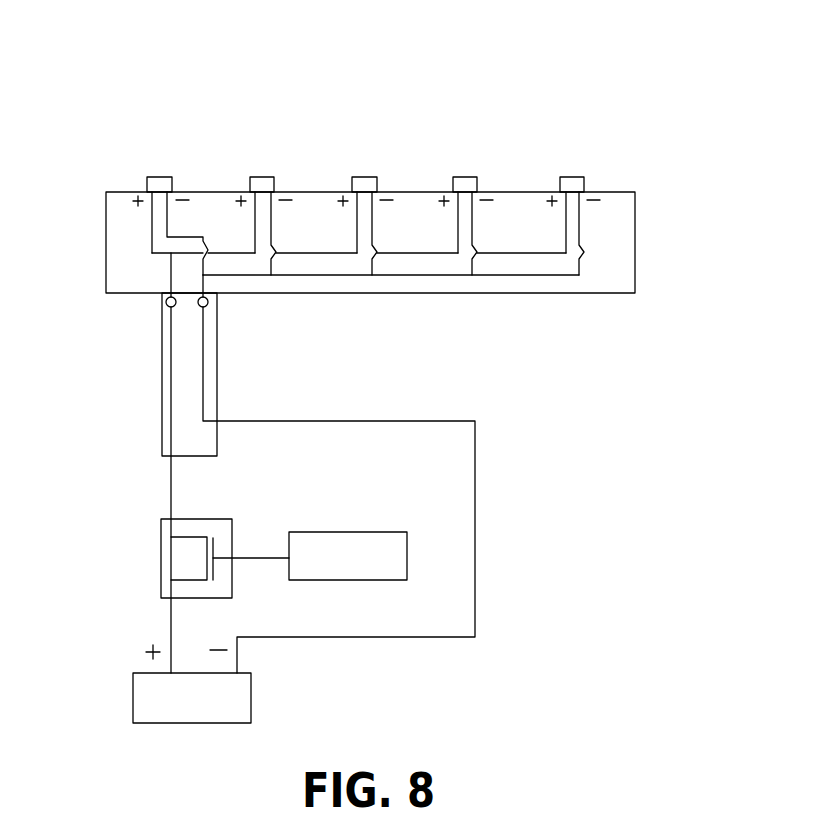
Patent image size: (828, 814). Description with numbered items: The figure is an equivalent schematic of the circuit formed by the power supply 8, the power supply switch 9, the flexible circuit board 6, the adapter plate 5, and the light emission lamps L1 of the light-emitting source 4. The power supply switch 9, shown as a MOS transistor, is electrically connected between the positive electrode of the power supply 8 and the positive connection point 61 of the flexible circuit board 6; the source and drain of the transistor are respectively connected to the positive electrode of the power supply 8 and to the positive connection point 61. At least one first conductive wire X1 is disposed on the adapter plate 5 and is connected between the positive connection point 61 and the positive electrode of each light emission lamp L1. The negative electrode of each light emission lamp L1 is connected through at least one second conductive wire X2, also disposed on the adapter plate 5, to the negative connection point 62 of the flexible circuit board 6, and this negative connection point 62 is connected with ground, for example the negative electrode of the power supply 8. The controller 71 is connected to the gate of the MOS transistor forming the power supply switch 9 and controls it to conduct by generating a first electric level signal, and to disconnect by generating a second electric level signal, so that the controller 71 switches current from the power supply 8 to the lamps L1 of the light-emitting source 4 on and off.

The light-emitting source 4 is at (321, 137).
The light emission lamp L1 is at (167, 177).
The first conductive wire X1 is at (153, 237).
The second conductive wire X2 is at (473, 218).
The adapter plate 5 is at (633, 243).
The flexible circuit board 6 is at (208, 354).
The positive connection point 61 is at (166, 303).
The negative connection point 62 is at (212, 302).
The power supply switch 9 is at (218, 519).
The controller 71 is at (358, 532).
The power supply 8 is at (252, 697).